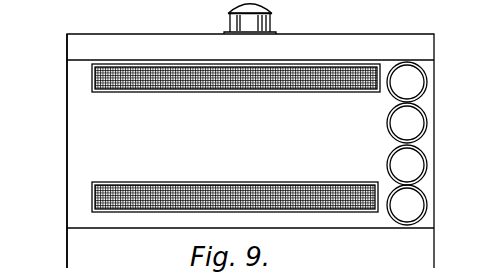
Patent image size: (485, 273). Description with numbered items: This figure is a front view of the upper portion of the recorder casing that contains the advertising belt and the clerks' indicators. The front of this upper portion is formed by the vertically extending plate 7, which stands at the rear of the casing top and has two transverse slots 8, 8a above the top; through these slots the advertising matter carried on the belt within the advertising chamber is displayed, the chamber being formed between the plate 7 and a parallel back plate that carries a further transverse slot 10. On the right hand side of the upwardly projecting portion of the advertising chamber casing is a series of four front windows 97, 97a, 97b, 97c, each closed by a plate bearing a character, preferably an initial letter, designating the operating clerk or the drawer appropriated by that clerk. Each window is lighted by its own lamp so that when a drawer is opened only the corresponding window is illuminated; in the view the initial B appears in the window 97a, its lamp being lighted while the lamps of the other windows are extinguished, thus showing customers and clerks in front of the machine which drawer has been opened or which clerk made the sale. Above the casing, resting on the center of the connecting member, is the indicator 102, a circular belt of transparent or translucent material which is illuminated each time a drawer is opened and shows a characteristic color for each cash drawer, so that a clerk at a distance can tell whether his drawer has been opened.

The vertically extending plate 7 is at (81, 147).
The transverse slot 8 is at (101, 92).
The transverse slot 8a is at (146, 182).
The transverse slot 10 is at (397, 43).
The front window 97 is at (417, 78).
The front window 97a is at (419, 120).
The front window 97b is at (415, 168).
The front window 97c is at (415, 207).
The indicator 102 is at (271, 22).